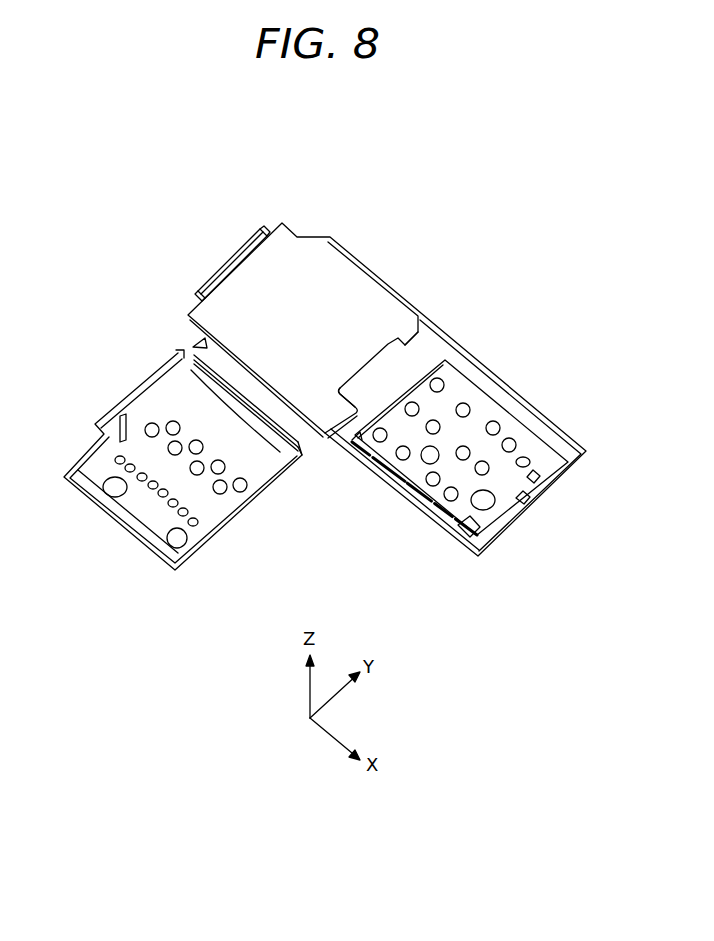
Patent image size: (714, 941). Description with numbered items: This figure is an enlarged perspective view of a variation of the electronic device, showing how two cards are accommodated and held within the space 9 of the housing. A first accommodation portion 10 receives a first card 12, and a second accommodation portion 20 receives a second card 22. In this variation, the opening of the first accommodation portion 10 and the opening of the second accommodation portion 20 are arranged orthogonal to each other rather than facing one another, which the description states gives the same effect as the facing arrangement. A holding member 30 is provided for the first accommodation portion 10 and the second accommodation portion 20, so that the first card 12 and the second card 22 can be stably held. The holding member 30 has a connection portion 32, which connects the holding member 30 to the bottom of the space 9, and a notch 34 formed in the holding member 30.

The space 9 is at (122, 330).
The first accommodation portion 10 is at (208, 503).
The first card 12 is at (238, 377).
The second accommodation portion 20 is at (463, 432).
The second card 22 is at (403, 378).
The holding member 30 is at (327, 280).
The connection portion 32 is at (220, 268).
The notch 34 is at (360, 372).